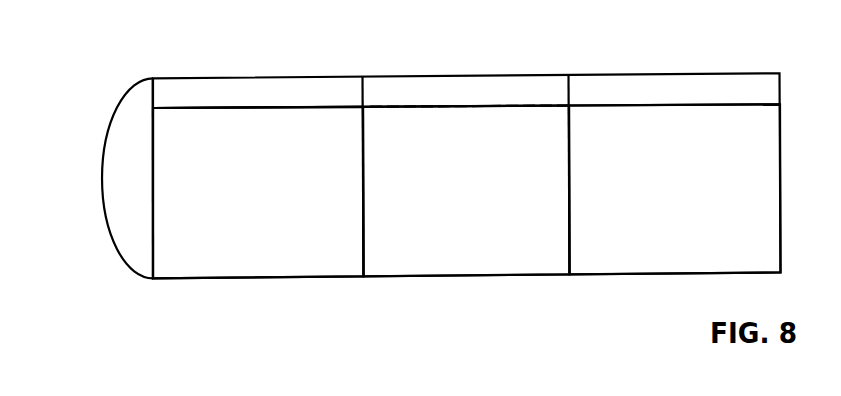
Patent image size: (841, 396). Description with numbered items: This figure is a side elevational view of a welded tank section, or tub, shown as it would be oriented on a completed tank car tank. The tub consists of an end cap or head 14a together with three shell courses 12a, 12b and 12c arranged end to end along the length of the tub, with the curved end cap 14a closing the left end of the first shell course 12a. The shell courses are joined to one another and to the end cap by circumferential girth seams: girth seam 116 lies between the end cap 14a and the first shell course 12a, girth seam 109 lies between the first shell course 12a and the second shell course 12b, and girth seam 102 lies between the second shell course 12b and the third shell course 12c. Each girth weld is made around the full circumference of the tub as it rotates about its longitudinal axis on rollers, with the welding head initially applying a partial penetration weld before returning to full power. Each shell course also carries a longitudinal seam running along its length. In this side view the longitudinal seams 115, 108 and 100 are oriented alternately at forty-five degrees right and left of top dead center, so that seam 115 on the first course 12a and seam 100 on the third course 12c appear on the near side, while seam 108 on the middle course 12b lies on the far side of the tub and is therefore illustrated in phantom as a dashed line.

The longitudinal weld seam 100 is at (695, 103).
The longitudinal weld seam 115 is at (255, 107).
The longitudinal weld seam 108 is at (487, 106).
The end cap 14a is at (117, 160).
The girth weld seam 116 is at (153, 228).
The girth weld seam 109 is at (363, 229).
The girth weld seam 102 is at (570, 229).
The shell course 12a is at (277, 175).
The shell course 12b is at (487, 174).
The shell course 12c is at (702, 174).